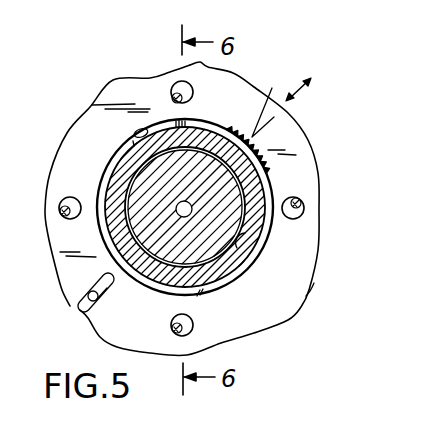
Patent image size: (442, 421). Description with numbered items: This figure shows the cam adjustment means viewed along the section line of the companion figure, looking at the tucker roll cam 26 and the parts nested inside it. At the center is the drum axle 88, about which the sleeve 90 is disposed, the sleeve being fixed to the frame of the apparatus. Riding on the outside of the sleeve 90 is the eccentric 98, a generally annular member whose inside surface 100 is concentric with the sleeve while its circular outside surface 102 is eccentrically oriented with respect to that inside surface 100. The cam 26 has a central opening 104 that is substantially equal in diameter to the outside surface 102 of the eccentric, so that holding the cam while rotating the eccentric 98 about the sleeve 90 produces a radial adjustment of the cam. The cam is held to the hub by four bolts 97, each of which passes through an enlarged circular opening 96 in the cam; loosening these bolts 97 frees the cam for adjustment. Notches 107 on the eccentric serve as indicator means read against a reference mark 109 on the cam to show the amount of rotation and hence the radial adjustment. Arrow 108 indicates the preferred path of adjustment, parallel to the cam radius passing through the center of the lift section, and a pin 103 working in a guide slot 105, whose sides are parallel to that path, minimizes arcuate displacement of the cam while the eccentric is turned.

The tucker roll cam 26 is at (63, 141).
The drum axle 88 is at (203, 253).
The sleeve 90 is at (243, 182).
The enlarged circular opening 96 is at (181, 82).
The bolts 97 is at (172, 96).
The eccentric 98 is at (236, 274).
The inside surface 100 is at (238, 265).
The outside surface 102 is at (308, 292).
The pin 103 is at (80, 310).
The central opening 104 is at (134, 133).
The guide slot 105 is at (82, 291).
The notches 107 is at (236, 128).
The arrow 108 is at (310, 97).
The reference mark 109 is at (273, 102).